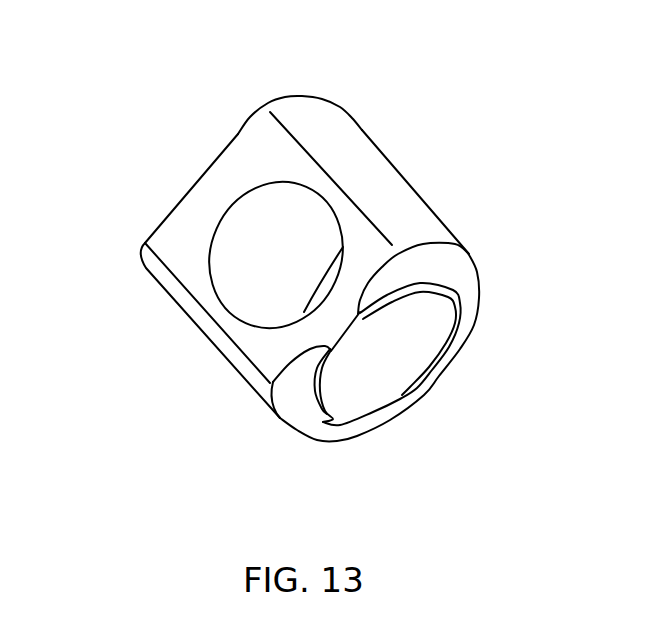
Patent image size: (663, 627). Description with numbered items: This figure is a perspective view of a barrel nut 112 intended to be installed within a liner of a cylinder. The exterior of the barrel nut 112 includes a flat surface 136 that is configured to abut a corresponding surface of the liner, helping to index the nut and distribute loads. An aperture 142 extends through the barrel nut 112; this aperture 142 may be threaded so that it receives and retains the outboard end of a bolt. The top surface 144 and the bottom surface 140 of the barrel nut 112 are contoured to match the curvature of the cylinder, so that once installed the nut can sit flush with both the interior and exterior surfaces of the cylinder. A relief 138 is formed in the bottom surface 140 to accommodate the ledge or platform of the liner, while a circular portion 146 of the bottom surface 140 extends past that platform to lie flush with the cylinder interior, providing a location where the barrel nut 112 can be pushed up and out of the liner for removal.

The barrel nut 112 is at (437, 147).
The flat surface 136 is at (173, 221).
The relief 138 is at (298, 417).
The bottom surface 140 is at (410, 399).
The aperture 142 is at (238, 203).
The top surface 144 is at (250, 118).
The circular portion 146 is at (450, 293).